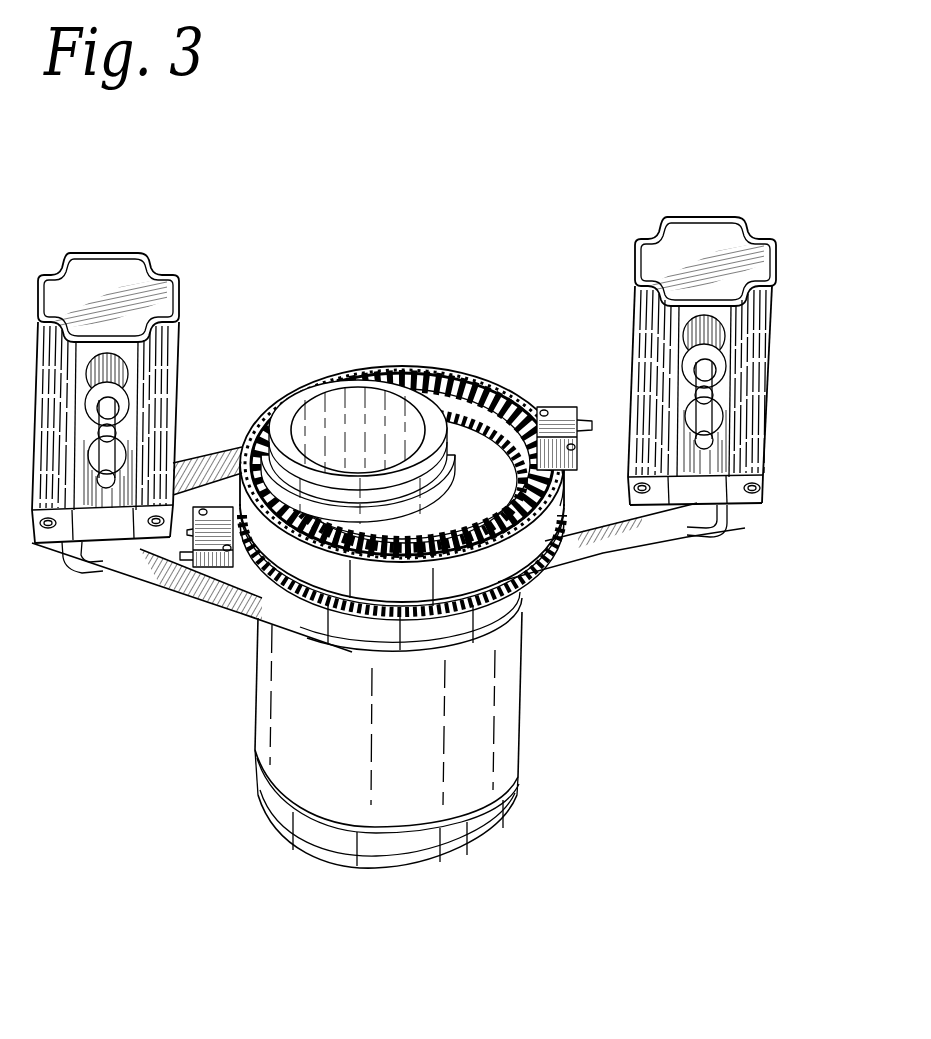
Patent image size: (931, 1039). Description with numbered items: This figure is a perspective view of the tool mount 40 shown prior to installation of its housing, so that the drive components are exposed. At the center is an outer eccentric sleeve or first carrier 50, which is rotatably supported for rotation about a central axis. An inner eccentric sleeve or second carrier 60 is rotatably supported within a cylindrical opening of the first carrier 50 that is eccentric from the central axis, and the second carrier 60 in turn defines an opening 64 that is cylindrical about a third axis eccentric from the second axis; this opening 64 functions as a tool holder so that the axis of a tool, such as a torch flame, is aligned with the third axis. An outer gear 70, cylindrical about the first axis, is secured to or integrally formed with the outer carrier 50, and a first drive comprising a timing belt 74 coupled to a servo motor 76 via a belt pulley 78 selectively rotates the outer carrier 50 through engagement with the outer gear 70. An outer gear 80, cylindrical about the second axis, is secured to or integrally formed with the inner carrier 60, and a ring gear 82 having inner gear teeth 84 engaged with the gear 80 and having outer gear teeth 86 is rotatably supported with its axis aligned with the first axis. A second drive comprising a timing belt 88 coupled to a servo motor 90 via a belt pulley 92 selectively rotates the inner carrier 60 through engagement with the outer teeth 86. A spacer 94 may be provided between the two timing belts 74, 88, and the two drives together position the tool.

The tool mount 40 is at (367, 290).
The outer eccentric sleeve or first carrier 50 is at (515, 380).
The inner eccentric sleeve or second carrier 60 is at (440, 380).
The opening 64 is at (318, 405).
The outer gear 70 is at (260, 583).
The timing belt 74 is at (140, 577).
The servo motor 76 is at (152, 265).
The belt pulley 78 is at (73, 568).
The outer gear 80 is at (490, 380).
The ring gear 82 is at (537, 380).
The inner gear teeth 84 is at (387, 367).
The outer gear teeth 86 is at (557, 507).
The timing belt 88 is at (657, 538).
The servo motor 90 is at (773, 263).
The belt pulley 92 is at (715, 538).
The spacer 94 is at (490, 618).